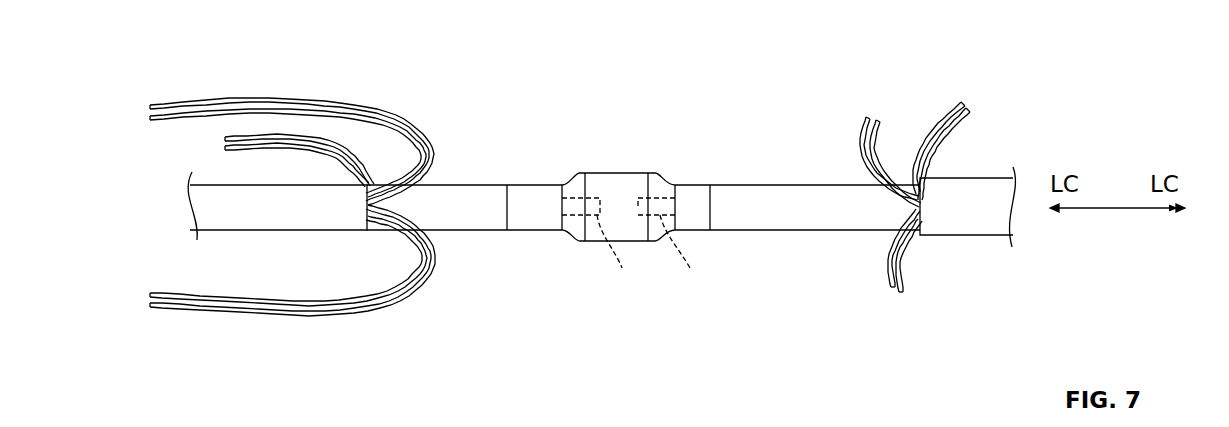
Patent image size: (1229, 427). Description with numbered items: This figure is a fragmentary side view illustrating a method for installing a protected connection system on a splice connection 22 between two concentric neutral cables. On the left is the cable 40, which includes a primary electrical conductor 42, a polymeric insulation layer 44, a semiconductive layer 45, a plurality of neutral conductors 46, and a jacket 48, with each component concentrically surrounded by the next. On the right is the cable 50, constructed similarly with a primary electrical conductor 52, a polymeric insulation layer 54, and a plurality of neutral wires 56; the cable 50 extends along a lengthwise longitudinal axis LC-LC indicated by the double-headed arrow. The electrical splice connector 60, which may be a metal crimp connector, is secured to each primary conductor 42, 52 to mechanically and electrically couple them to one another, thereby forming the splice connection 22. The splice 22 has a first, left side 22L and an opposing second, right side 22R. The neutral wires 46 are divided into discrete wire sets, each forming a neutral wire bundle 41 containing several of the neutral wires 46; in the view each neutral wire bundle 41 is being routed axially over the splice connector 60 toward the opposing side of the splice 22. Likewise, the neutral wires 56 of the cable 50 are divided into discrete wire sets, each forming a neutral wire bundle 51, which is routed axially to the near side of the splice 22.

The splice connection 22 is at (797, 213).
The first side of the splice 22L is at (437, 192).
The second side of the splice 22R is at (801, 160).
The cable 40 is at (643, 213).
The neutral wire bundle 41 is at (377, 101).
The primary electrical conductor 42 is at (599, 249).
The polymeric insulation layer 44 is at (528, 218).
The semiconductive layer 45 is at (467, 217).
The neutral conductors 46 is at (365, 343).
The jacket 48 is at (312, 198).
The cable 50 is at (956, 156).
The neutral wire bundle 51 is at (919, 209).
The primary electrical conductor 52 is at (671, 249).
The polymeric insulation layer 54 is at (695, 220).
The neutral wires 56 is at (932, 298).
The electrical splice connector 60 is at (633, 208).